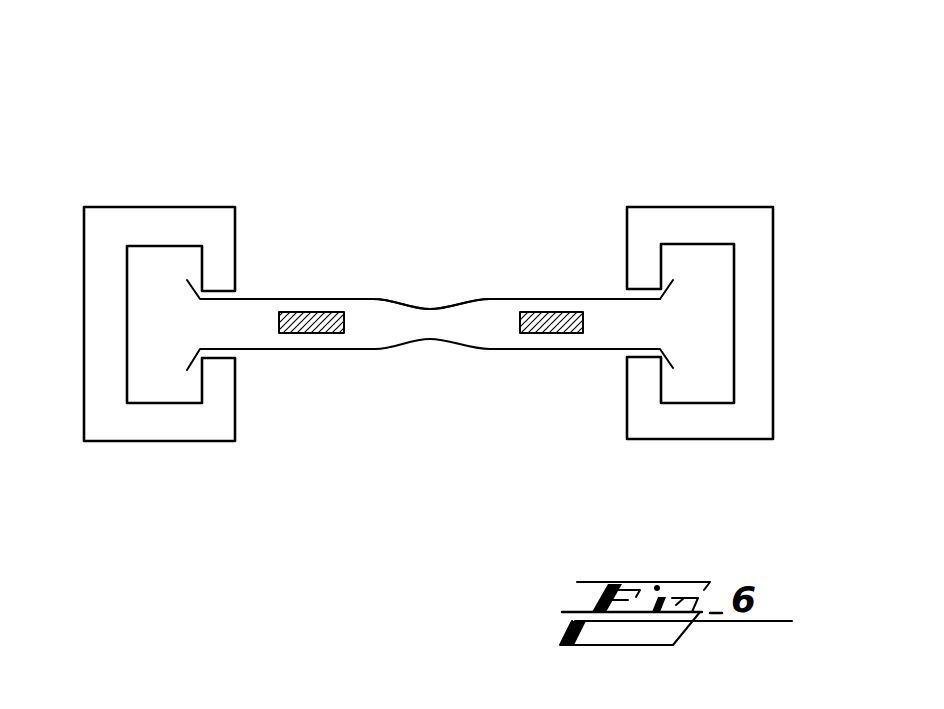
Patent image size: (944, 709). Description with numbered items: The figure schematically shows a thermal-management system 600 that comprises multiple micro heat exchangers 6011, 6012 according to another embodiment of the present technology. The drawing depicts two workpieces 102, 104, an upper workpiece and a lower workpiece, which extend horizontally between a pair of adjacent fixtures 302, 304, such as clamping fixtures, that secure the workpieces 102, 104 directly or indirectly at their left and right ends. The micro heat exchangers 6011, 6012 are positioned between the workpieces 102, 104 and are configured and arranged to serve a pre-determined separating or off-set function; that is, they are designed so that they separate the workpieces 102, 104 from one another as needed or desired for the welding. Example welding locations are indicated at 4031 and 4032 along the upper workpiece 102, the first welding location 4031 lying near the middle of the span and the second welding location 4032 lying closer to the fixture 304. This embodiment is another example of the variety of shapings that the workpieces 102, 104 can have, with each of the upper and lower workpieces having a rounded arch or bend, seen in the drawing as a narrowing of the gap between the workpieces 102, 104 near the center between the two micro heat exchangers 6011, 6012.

The thermal-management system 600 is at (340, 102).
The fixture 302 is at (173, 441).
The fixture 304 is at (703, 441).
The workpiece 102 is at (323, 299).
The workpiece 104 is at (577, 349).
The welding location 4031 is at (434, 282).
The welding location 4032 is at (602, 282).
The micro heat exchanger 6011 is at (343, 350).
The micro heat exchanger 6012 is at (517, 350).